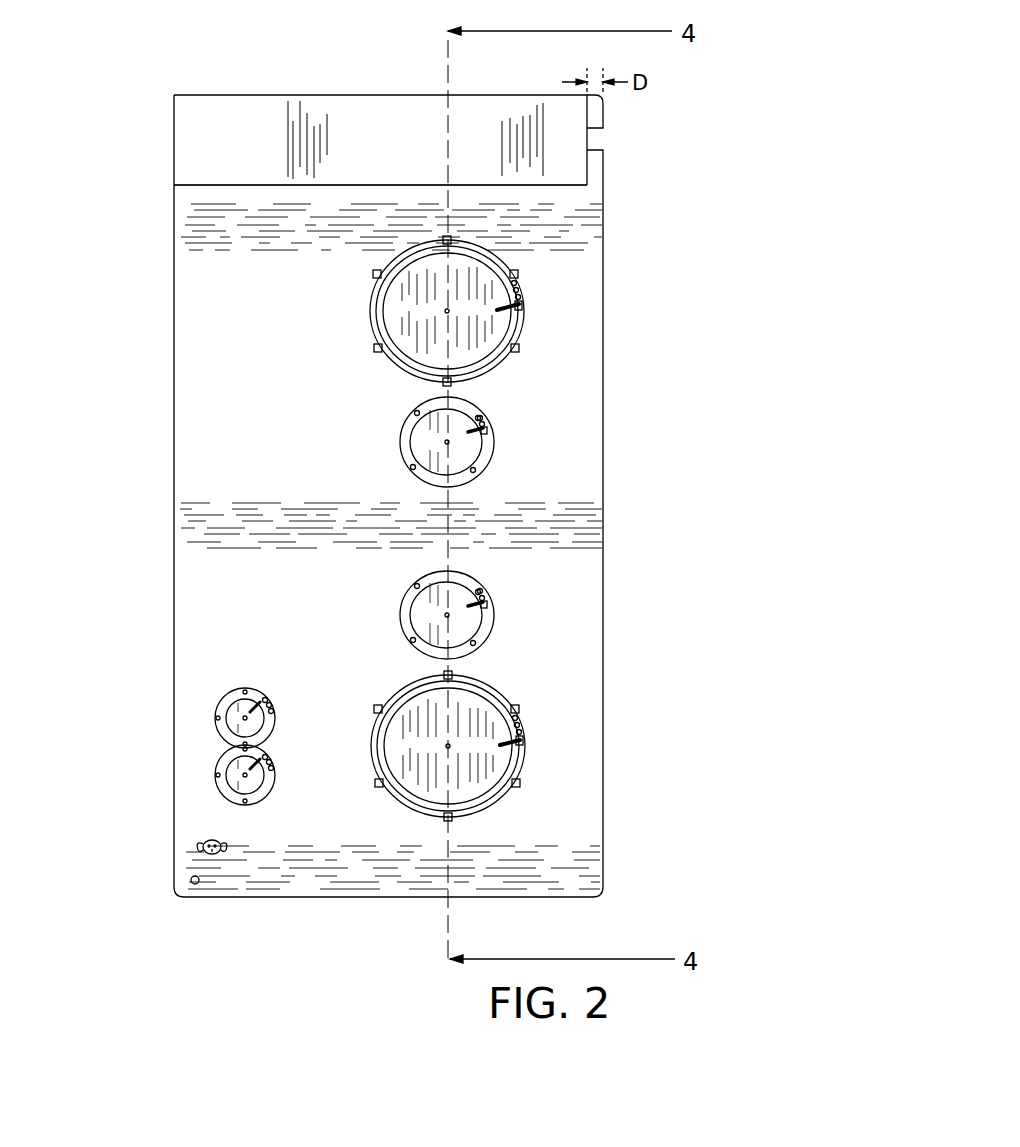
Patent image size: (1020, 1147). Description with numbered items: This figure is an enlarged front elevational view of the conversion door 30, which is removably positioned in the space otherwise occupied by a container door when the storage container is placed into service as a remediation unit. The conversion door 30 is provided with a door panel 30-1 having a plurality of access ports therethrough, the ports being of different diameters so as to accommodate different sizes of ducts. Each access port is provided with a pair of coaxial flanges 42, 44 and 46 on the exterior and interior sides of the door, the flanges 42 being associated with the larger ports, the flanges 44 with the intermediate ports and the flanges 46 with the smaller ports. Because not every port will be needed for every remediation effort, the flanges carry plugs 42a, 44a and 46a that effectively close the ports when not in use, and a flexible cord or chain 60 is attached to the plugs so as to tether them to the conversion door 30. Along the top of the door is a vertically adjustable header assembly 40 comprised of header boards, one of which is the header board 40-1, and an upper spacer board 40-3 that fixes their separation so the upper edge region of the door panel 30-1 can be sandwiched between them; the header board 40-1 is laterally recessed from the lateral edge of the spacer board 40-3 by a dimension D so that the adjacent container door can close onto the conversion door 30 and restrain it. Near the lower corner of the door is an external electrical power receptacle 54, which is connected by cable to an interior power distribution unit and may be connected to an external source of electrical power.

The conversion door 30 is at (96, 470).
The door panel 30-1 is at (284, 404).
The header assembly 40 is at (166, 150).
The header board 40-1 is at (406, 148).
The upper spacer board 40-3 is at (597, 113).
The flange 42 is at (518, 327).
The exterior plug 42a is at (436, 322).
The flange 44 is at (404, 470).
The exterior plug 44a is at (466, 464).
The flange 46 is at (214, 772).
The exterior plug 46a is at (262, 722).
The external electrical power receptacle 54 is at (206, 842).
The flexible cord or chain 60 is at (521, 292).